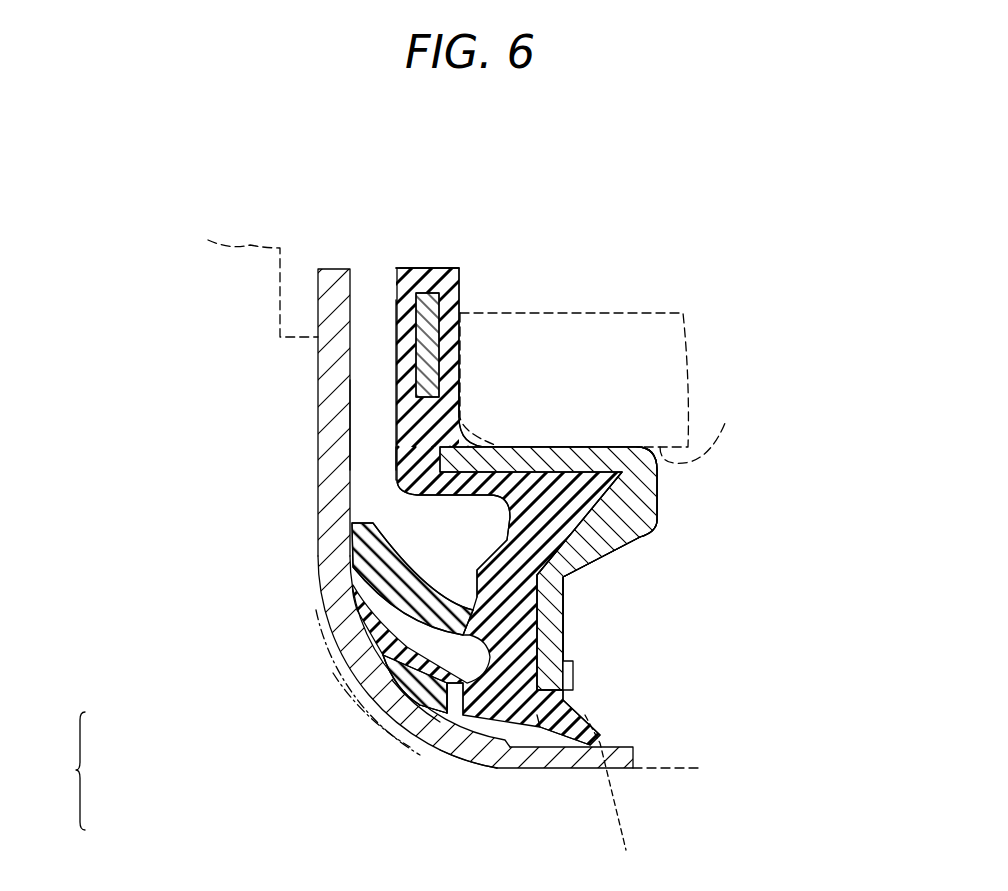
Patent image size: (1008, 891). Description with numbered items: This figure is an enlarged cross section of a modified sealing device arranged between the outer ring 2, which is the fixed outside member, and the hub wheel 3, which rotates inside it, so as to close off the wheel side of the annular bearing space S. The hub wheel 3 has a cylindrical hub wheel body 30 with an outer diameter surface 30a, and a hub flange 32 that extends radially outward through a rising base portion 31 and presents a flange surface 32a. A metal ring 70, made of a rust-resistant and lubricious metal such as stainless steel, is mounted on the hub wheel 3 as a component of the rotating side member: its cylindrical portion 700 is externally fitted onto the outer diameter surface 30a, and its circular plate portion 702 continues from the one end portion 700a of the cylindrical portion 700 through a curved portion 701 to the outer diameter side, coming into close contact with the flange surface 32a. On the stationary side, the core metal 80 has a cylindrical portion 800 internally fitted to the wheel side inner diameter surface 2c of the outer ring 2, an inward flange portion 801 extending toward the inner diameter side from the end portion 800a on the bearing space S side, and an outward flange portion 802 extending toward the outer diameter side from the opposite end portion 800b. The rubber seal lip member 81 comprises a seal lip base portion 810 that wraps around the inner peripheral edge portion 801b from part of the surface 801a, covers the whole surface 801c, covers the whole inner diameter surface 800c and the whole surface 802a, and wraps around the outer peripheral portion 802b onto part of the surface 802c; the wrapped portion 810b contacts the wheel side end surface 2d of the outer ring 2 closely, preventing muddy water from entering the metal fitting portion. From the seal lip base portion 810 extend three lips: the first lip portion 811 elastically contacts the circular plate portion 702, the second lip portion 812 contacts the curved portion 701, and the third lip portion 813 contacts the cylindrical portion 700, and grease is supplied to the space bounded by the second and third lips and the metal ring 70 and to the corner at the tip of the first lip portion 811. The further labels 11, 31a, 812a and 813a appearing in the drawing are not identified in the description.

The outer ring 2 is at (498, 330).
The wheel side inner diameter surface 2c is at (725, 423).
The wheel side end surface 2d is at (393, 318).
The hub wheel 3 is at (504, 547).
The sealing structure 11 is at (477, 538).
The hub wheel body 30 is at (652, 754).
The outer diameter surface 30a is at (662, 766).
The rising base portion 31 is at (346, 683).
The curved portion inner surface 31a is at (412, 748).
The hub flange 32 is at (234, 412).
The flange surface 32a is at (318, 428).
The metal ring 70 is at (292, 652).
The cylindrical portion 700 is at (537, 770).
The one end portion 700a is at (474, 764).
The curved portion 701 is at (383, 704).
The circular plate portion 702 is at (333, 470).
The core metal 80 is at (477, 538).
The cylindrical portion 800 is at (550, 483).
The end portion 800a is at (648, 463).
The end portion 800b is at (396, 460).
The inner diameter surface 800c is at (651, 497).
The inward flange portion 801 is at (656, 587).
The surface 801a is at (561, 612).
The inner peripheral edge portion 801b is at (578, 702).
The surface 801c is at (640, 537).
The outward flange portion 802 is at (391, 336).
The surface 802a is at (397, 390).
The outer peripheral portion 802b is at (432, 282).
The surface 802c is at (428, 356).
The seal lip member 81 is at (468, 563).
The seal lip base portion 810 is at (477, 507).
The portion 810b is at (462, 405).
The first lip portion 811 is at (450, 630).
The second lip portion 812 is at (598, 767).
The lower lip groove 812a is at (553, 713).
The third lip portion 813 is at (366, 730).
The auxiliary lip recess 813a is at (458, 697).
The bearing space S is at (811, 600).